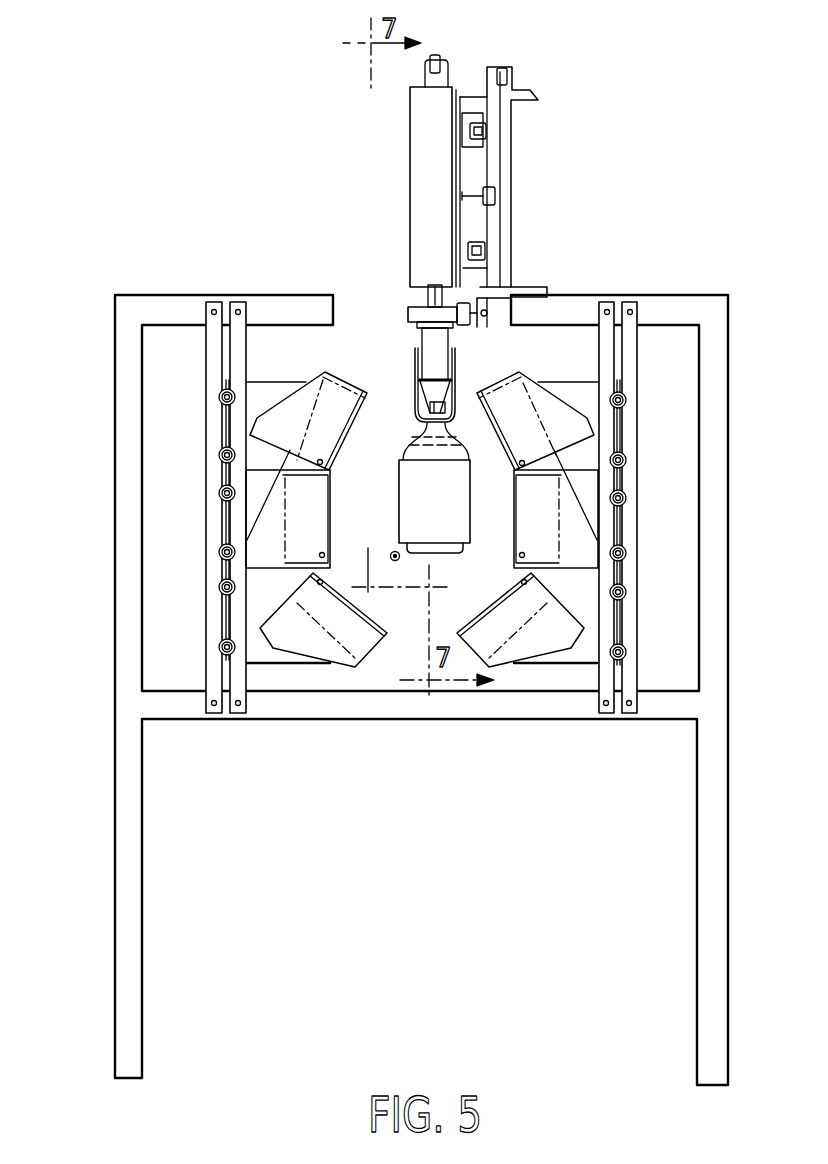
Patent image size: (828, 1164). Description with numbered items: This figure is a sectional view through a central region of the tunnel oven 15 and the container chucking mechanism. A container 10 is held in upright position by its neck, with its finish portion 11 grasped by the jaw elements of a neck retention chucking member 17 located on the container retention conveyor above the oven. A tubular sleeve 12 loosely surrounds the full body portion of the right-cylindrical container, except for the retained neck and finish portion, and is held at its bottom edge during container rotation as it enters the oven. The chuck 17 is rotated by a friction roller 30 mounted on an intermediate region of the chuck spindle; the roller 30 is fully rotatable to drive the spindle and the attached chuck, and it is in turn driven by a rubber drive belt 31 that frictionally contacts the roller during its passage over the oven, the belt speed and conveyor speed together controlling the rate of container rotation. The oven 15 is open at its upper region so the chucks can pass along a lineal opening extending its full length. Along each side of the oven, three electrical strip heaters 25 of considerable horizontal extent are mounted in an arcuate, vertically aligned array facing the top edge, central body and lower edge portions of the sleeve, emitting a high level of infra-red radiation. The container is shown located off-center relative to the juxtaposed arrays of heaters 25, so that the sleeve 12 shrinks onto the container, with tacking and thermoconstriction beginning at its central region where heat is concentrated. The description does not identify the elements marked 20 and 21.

The container 10 is at (410, 448).
The finish portion 11 is at (431, 408).
The sleeve 12 is at (400, 504).
The tunnel oven 15 is at (636, 291).
The container chucking member 17 is at (457, 383).
The center line 20 is at (401, 624).
The sensor 21 is at (393, 552).
The electrical heater 25 is at (330, 607).
The friction roller 30 is at (410, 314).
The drive belt 31 is at (462, 326).